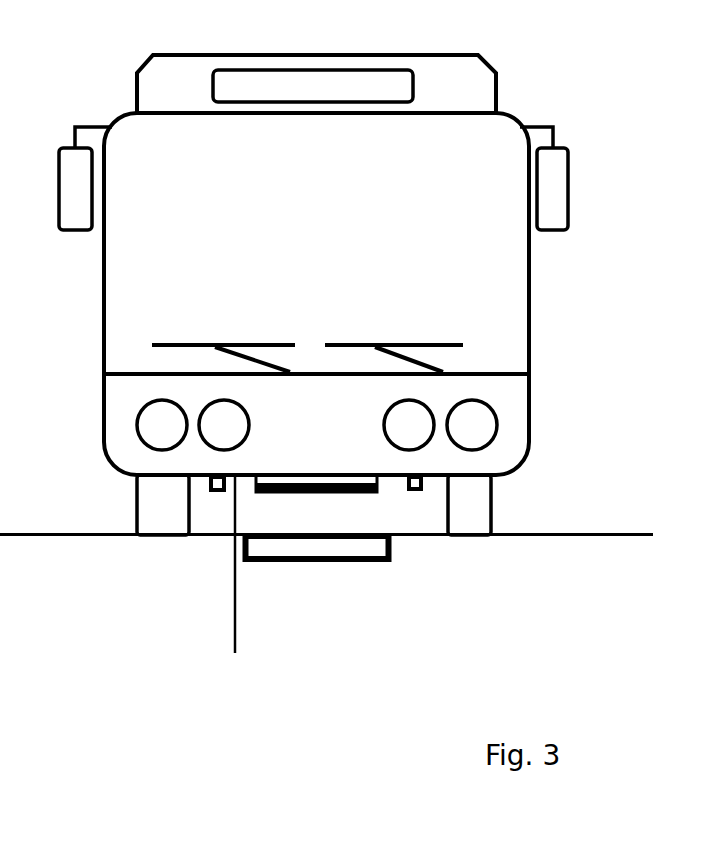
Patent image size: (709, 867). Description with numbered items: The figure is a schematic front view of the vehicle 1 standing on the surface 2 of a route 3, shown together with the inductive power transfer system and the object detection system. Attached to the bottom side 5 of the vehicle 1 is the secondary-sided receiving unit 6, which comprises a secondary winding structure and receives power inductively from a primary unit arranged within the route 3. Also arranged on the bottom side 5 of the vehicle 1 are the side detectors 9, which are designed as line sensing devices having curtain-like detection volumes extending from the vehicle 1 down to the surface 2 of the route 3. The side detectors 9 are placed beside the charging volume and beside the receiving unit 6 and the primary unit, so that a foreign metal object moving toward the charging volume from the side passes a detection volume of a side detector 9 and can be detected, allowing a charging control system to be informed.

The vehicle 1 is at (492, 302).
The surface 2 is at (620, 534).
The route 3 is at (603, 611).
The bottom side 5 is at (245, 584).
The secondary-sided receiving unit 6 is at (333, 475).
The side detectors 9 is at (209, 492).